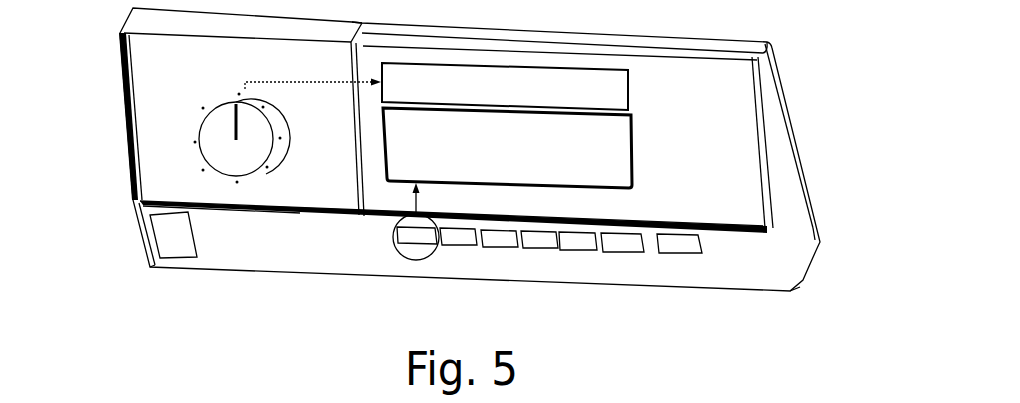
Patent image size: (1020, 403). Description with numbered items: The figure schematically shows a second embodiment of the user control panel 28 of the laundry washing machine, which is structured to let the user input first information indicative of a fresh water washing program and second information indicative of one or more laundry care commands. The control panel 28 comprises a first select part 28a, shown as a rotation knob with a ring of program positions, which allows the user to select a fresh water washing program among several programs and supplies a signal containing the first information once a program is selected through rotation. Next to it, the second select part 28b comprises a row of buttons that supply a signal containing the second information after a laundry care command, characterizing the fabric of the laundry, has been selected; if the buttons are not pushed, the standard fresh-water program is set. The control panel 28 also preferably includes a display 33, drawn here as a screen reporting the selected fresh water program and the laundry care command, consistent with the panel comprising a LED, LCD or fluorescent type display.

The user control panel 28 is at (296, 239).
The first select part 28a is at (202, 93).
The second select part 28b is at (590, 266).
The display 33 is at (649, 150).